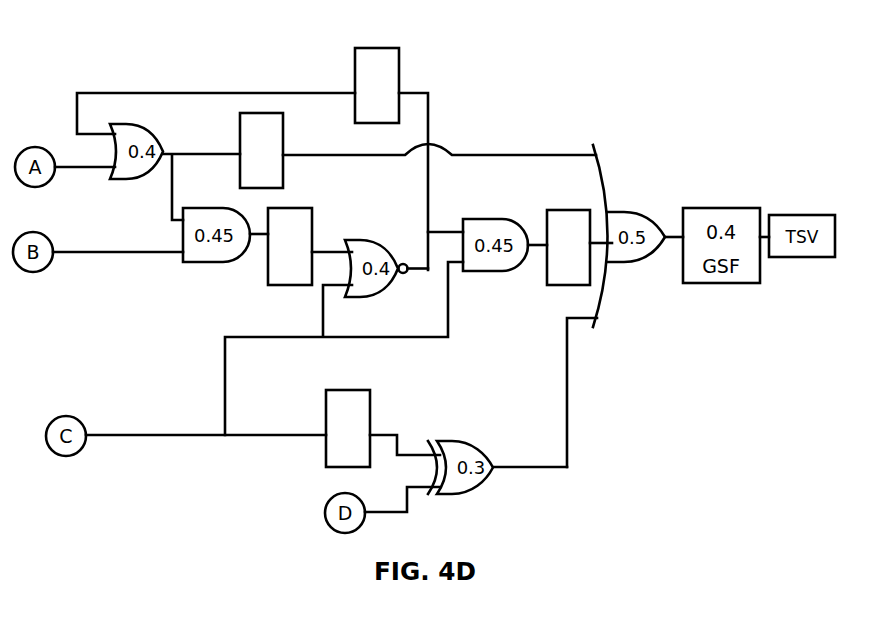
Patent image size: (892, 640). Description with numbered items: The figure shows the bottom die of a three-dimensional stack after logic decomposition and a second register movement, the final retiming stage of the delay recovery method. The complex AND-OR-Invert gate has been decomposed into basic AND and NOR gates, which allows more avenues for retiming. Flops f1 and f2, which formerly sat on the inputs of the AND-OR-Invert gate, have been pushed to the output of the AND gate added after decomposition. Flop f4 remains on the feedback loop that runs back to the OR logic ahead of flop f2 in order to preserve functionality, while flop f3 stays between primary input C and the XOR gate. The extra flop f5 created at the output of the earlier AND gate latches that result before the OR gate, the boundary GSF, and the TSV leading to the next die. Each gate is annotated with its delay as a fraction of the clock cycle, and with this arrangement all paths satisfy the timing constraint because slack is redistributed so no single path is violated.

The flop f1 is at (305, 244).
The flop f2 is at (278, 148).
The flop f3 is at (362, 427).
The flop f4 is at (377, 68).
The extra flop f5 is at (568, 228).